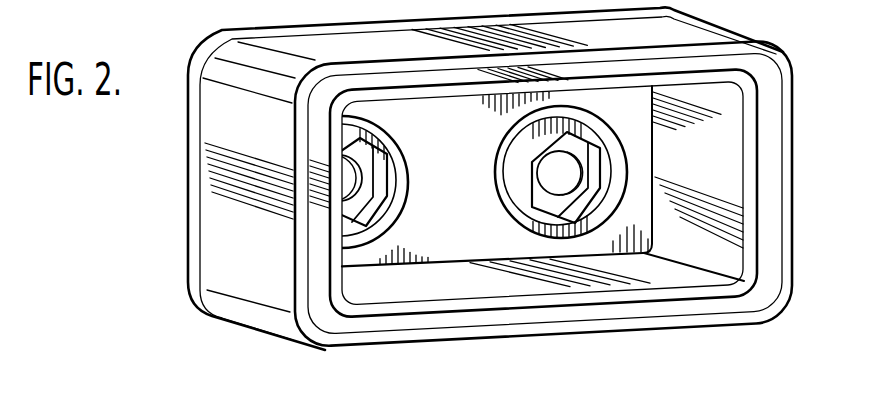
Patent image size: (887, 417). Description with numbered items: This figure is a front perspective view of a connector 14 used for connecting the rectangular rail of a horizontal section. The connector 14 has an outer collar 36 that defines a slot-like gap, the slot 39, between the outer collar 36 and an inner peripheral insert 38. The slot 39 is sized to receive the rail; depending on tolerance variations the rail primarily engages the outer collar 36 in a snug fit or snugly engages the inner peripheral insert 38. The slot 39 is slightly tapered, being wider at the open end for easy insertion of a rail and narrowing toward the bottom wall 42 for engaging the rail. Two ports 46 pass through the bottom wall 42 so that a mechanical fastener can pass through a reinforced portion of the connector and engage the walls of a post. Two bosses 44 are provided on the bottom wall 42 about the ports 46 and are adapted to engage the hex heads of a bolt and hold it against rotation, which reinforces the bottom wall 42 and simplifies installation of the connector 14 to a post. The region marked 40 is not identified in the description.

The connector 14 is at (299, 356).
The outer collar 36 is at (797, 297).
The inner peripheral insert 38 is at (453, 254).
The slot 39 is at (768, 212).
The back wall 40 is at (468, 207).
The bottom wall 42 is at (590, 240).
The boss 44 is at (510, 147).
The port 46 is at (562, 172).